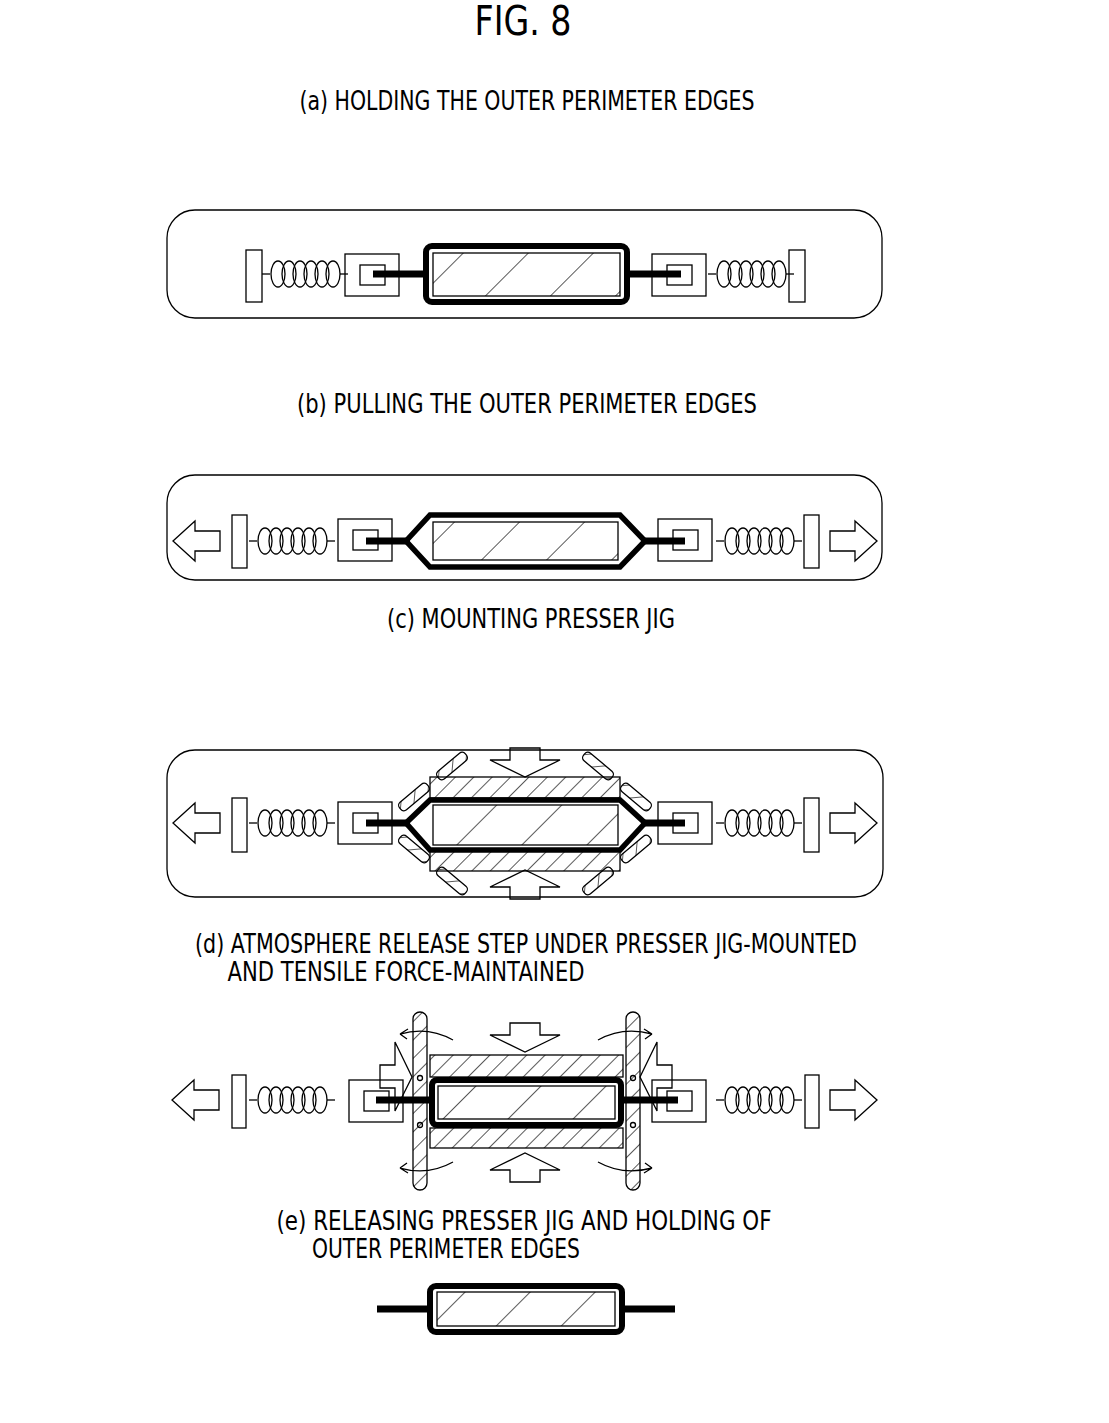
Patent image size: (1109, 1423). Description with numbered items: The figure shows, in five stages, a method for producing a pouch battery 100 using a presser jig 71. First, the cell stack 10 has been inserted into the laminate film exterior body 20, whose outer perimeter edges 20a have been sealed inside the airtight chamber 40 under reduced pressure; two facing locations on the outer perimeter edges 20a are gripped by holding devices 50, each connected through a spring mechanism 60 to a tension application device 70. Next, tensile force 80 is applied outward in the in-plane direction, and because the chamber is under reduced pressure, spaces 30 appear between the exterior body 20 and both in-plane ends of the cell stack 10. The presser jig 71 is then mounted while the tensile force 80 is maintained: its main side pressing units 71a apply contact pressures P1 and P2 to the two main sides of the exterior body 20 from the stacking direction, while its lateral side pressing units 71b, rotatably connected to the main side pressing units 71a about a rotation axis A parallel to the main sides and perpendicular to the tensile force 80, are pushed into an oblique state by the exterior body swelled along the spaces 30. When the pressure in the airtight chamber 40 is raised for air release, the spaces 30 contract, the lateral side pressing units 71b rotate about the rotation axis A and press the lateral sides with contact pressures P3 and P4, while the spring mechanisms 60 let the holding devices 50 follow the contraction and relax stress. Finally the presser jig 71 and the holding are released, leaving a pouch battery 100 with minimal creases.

The cell stack 10 is at (466, 272).
The laminate film exterior body 20 is at (518, 243).
The outer perimeter edges 20a is at (411, 268).
The spaces 30 is at (418, 525).
The airtight chamber 40 is at (298, 210).
The holding devices 50 is at (376, 296).
The spring mechanisms 60 is at (308, 290).
The tension application devices 70 is at (252, 302).
The presser jig 71 is at (550, 771).
The main side pressing units 71a is at (497, 858).
The lateral side pressing units 71b is at (415, 688).
The tensile force 80 is at (208, 532).
The pouch battery 100 is at (537, 125).
The rotation axis A is at (662, 837).
The contact pressure P1 is at (525, 887).
The contact pressure P2 is at (525, 1042).
The contact pressure P3 is at (381, 1076).
The contact pressure P4 is at (674, 1076).